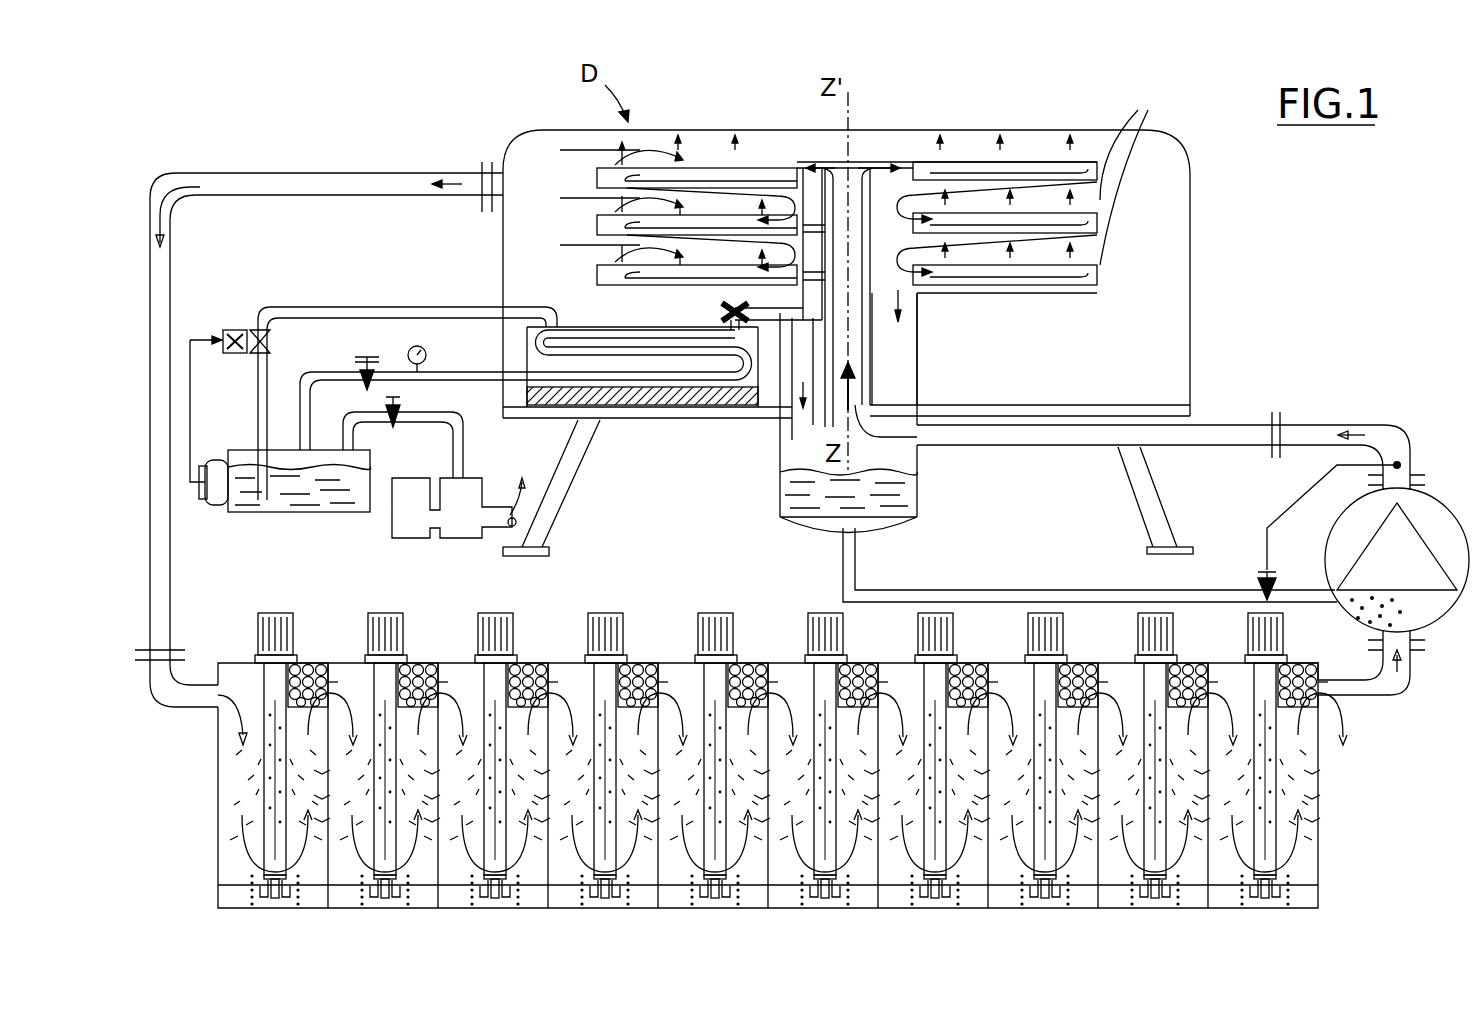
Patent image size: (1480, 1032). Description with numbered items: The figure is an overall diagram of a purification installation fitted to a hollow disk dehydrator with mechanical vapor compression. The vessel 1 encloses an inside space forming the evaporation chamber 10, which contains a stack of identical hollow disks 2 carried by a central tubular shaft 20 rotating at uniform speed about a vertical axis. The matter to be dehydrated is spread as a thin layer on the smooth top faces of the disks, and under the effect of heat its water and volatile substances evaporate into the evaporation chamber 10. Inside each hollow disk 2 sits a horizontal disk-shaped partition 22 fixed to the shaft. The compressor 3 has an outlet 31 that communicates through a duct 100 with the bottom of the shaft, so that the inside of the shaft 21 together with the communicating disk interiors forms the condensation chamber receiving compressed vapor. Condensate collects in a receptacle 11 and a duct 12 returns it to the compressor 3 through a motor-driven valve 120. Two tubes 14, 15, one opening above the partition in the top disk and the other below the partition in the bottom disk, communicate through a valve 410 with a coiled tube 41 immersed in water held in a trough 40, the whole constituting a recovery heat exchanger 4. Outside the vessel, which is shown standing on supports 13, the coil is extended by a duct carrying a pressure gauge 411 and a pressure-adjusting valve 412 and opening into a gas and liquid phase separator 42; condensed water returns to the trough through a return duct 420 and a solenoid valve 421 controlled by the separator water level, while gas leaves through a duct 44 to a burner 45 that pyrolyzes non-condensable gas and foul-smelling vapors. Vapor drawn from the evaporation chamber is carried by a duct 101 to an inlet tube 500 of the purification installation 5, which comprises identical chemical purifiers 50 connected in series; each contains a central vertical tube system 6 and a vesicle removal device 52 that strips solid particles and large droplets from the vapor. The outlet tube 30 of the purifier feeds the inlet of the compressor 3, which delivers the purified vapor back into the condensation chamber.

The vessel 1 is at (1192, 247).
The hollow disk 2 is at (1124, 171).
The compressor 3 is at (1445, 625).
The recovery heat exchanger 4 is at (577, 316).
The purification installation 5 is at (668, 640).
The system 6 is at (258, 775).
The evaporation chamber 10 is at (1060, 360).
The receptacle 11 is at (780, 489).
The duct 12 is at (1025, 590).
The legs 13 is at (560, 500).
The tube 14 is at (805, 170).
The tube 15 is at (872, 330).
The central tubular shaft 20 is at (905, 180).
The condensation chamber 21 is at (862, 253).
The partition 22 is at (1025, 178).
The outlet tube 30 is at (1385, 700).
The outlet 31 is at (1355, 422).
The trough 40 is at (760, 368).
The coiled tube 41 is at (640, 406).
The separator 42 is at (296, 514).
The duct 44 is at (436, 420).
The burner 45 is at (437, 542).
The chemical purifier 50 is at (218, 825).
The vesicle removal device 52 is at (316, 665).
The duct 100 is at (968, 442).
The duct 101 is at (425, 172).
The motor-driven valve 120 is at (1262, 572).
The valve 410 is at (458, 372).
The pressure gauge 411 is at (411, 352).
The valve 412 is at (357, 358).
The return duct 420 is at (347, 305).
The solenoid valve 421 is at (232, 328).
The inlet tube 500 is at (168, 700).